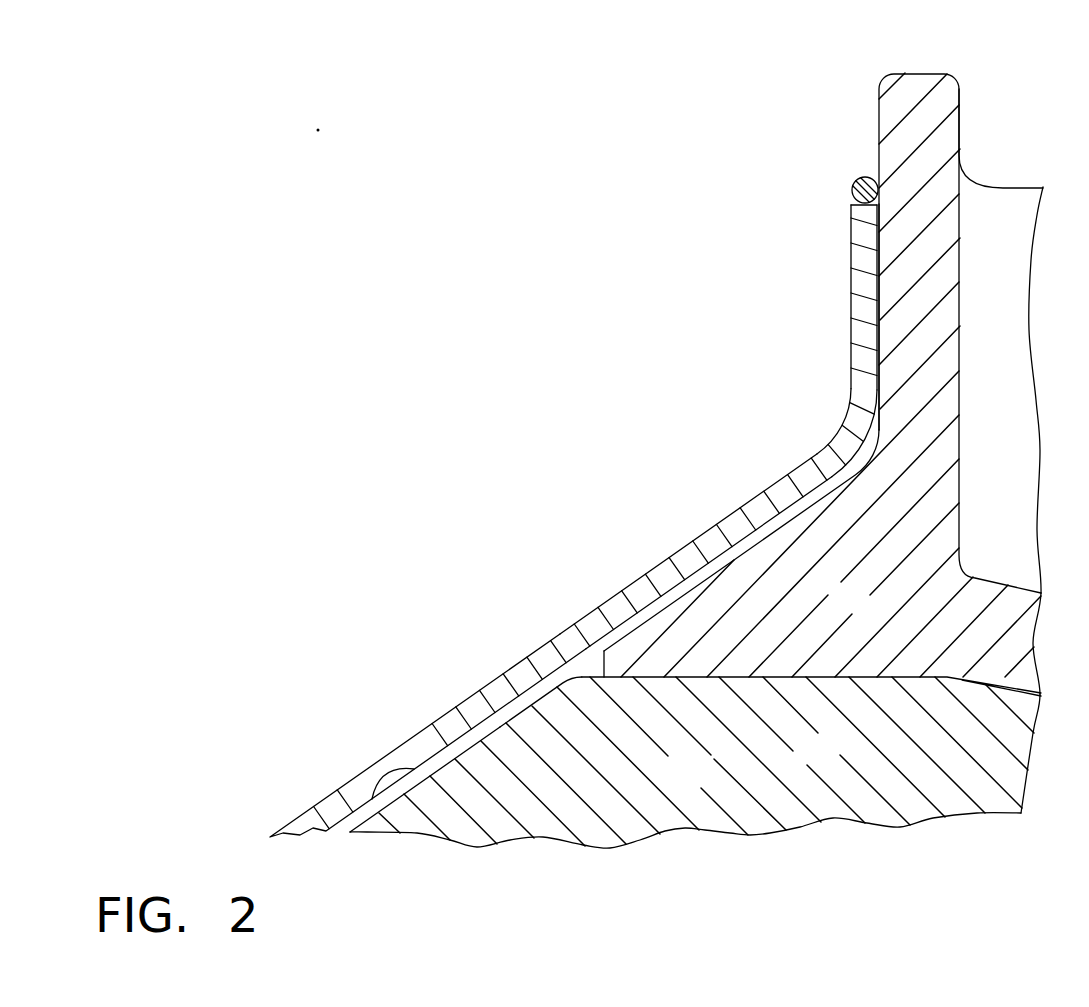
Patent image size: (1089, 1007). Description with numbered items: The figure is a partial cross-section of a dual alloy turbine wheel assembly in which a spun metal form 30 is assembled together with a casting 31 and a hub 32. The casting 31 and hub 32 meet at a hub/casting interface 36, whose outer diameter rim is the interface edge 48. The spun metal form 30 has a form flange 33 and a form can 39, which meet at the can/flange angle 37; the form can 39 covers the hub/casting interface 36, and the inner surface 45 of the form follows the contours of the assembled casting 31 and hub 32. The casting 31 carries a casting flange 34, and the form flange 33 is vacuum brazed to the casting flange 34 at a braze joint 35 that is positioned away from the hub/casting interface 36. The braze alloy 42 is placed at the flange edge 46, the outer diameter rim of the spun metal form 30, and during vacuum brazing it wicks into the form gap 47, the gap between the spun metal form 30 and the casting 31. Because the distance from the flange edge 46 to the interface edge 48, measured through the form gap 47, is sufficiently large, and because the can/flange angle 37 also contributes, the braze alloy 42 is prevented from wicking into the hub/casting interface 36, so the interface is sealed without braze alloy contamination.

The spun metal form 30 is at (633, 588).
The casting 31 is at (862, 610).
The hub 32 is at (708, 784).
The form flange 33 is at (862, 327).
The casting flange 34 is at (938, 112).
The braze joint 35 is at (878, 218).
The hub/casting interface 36 is at (740, 677).
The can/flange angle 37 is at (830, 455).
The form can 39 is at (480, 703).
The braze alloy 42 is at (861, 178).
The inner surface 45 is at (377, 777).
The flange edge 46 is at (852, 189).
The form gap 47 is at (743, 553).
The interface edge 48 is at (578, 663).